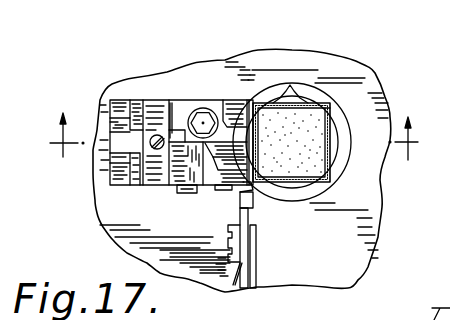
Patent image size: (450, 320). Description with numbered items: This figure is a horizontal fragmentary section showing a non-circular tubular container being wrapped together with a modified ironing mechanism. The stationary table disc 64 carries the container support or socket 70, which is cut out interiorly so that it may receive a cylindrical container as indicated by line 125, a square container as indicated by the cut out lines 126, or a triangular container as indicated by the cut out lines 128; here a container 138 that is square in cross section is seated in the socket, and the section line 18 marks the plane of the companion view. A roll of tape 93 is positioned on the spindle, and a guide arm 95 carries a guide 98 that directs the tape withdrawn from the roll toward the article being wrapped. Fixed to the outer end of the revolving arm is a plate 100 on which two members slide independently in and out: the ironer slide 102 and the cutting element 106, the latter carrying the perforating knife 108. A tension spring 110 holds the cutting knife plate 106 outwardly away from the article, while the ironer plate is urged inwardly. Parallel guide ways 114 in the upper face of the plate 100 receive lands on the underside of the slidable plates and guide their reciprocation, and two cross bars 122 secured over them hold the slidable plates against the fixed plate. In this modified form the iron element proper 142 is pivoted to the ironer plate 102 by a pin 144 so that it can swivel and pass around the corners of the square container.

The section line 18- 18 is at (237, 142).
The table disc 64 is at (340, 68).
The container support or socket 70 is at (343, 132).
The roll of tape 93 is at (235, 277).
The guide arm 95 is at (251, 253).
The guide 98 is at (251, 200).
The plate 100 is at (113, 178).
The ironer slide 102 is at (138, 103).
The cutting element 106 is at (133, 180).
The perforating knife 108 is at (218, 190).
The tension spring 110 is at (183, 193).
The guide ways 114 is at (107, 158).
The cross bars 122 is at (163, 107).
The line for cylindrical container 125 is at (305, 101).
The cut out lines for square container 126 is at (325, 103).
The cut out lines for triangular container 128 is at (285, 97).
The container 138 is at (332, 112).
The iron element proper 142 is at (248, 100).
The pin 144 is at (203, 120).